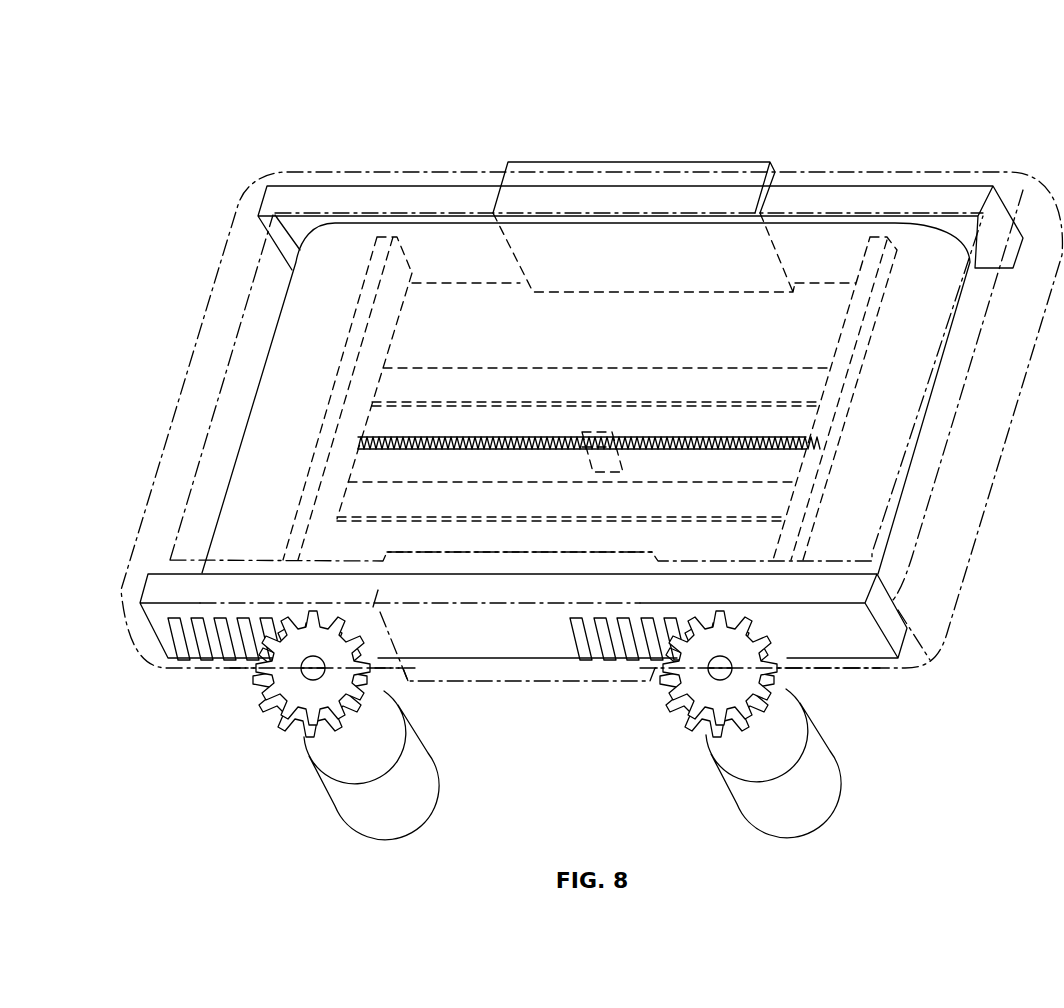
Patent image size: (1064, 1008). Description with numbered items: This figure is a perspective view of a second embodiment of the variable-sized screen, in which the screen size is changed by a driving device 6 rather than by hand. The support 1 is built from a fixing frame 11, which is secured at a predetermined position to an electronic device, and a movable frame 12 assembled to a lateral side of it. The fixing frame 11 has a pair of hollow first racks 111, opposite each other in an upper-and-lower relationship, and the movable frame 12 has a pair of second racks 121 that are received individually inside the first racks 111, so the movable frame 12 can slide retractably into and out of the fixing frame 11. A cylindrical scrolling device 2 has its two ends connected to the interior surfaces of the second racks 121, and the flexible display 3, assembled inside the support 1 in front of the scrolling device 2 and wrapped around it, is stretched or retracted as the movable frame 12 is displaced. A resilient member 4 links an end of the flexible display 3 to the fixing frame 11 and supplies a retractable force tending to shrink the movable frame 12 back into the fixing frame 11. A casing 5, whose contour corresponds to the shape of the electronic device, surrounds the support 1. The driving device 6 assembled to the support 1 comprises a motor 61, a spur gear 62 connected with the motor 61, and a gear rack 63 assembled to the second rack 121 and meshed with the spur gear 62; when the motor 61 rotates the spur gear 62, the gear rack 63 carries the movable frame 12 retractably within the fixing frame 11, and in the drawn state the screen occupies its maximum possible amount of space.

The support 1 is at (529, 422).
The fixing frame 11 is at (692, 187).
The first racks 111 is at (517, 587).
The movable frame 12 is at (362, 173).
The second racks 121 is at (243, 584).
The scrolling device 2 is at (261, 429).
The flexible display 3 is at (828, 247).
The resilient member 4 is at (463, 430).
The casing 5 is at (990, 173).
The driving device 6 is at (519, 750).
The motor 61 is at (420, 783).
The spur gear 62 is at (311, 796).
The gear rack 63 is at (198, 662).